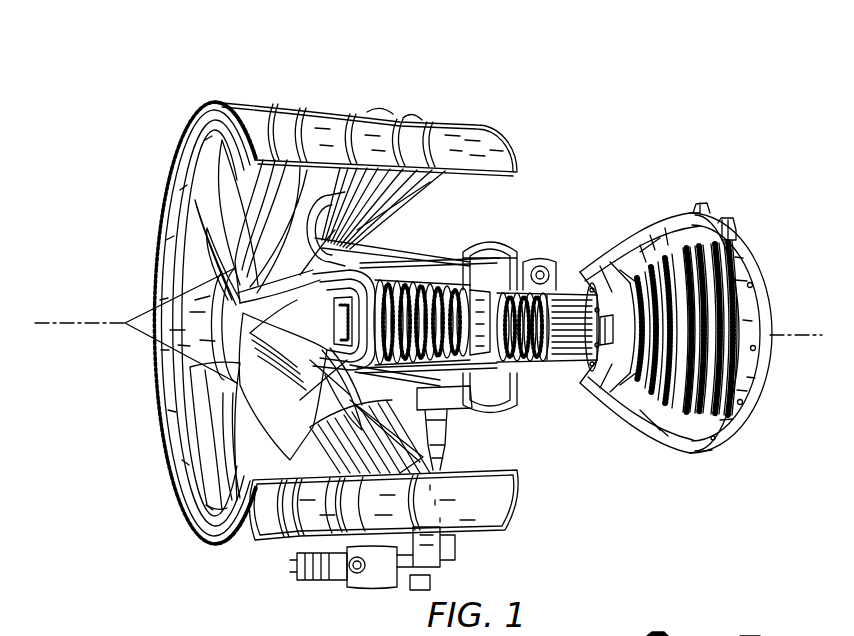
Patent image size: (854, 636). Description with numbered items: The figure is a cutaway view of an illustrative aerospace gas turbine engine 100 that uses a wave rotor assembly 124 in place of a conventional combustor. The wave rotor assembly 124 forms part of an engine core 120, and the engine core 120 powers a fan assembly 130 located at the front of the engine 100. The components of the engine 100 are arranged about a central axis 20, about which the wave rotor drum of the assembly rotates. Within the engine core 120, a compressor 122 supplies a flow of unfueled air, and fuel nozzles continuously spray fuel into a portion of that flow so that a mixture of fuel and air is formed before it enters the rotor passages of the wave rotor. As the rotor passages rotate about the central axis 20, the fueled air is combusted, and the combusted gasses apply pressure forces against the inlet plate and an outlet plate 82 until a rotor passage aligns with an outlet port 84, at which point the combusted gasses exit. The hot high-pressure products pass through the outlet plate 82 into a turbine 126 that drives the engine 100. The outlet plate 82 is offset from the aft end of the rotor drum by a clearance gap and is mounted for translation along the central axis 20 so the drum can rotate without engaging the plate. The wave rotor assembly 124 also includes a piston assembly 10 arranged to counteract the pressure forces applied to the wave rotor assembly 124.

The gas turbine engine 100 is at (665, 78).
The piston assembly 10 is at (602, 352).
The central axis 20 is at (50, 326).
The outlet plate 82 is at (713, 635).
The outlet port 84 is at (758, 635).
The engine core 120 is at (553, 178).
The compressor 122 is at (419, 291).
The wave rotor assembly 124 is at (578, 306).
The turbine 126 is at (677, 301).
The fan assembly 130 is at (250, 212).